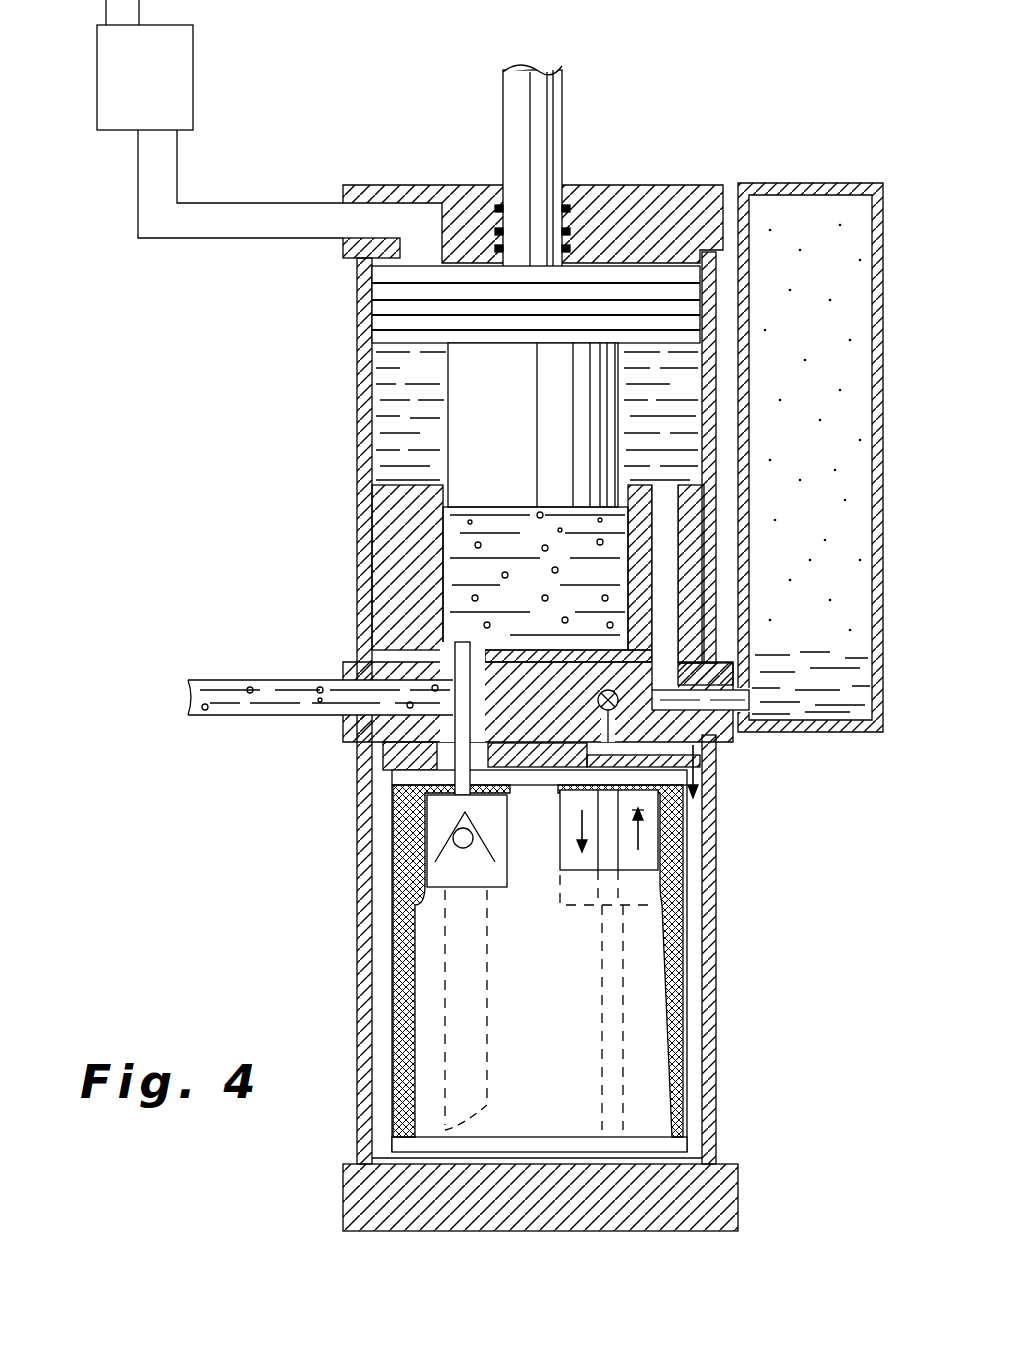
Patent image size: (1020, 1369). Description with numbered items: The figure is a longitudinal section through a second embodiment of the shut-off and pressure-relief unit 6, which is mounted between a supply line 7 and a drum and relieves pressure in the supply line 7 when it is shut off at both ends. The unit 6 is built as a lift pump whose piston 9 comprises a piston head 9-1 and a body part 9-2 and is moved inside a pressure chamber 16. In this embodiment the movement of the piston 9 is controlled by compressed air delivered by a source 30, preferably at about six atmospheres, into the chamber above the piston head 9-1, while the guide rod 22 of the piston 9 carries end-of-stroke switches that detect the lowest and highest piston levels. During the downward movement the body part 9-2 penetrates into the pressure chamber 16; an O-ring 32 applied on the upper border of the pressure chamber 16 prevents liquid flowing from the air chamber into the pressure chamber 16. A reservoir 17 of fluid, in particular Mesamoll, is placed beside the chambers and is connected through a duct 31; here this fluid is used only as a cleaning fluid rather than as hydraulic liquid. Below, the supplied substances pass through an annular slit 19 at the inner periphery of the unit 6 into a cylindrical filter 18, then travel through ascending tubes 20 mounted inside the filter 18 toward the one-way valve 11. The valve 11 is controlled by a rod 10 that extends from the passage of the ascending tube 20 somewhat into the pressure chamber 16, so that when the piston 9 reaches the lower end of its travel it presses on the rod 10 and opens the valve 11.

The source 30 is at (180, 100).
The guide rod 22 is at (520, 117).
The reservoir 17 is at (802, 218).
The piston head 9-1 is at (393, 295).
The piston 9 is at (432, 358).
The body part 9-2 is at (480, 437).
The O-ring 32 is at (420, 503).
The pressure chamber 16 is at (465, 578).
The supply line 7 is at (226, 690).
The rod 10 is at (440, 745).
The one-way valve 11 is at (445, 832).
The ascending tube 20 is at (445, 937).
The duct 31 is at (717, 698).
The cylindrical filter 18 is at (687, 935).
The annular slit 19 is at (690, 950).
The shut-off and pressure-relief unit 6 is at (632, 1002).